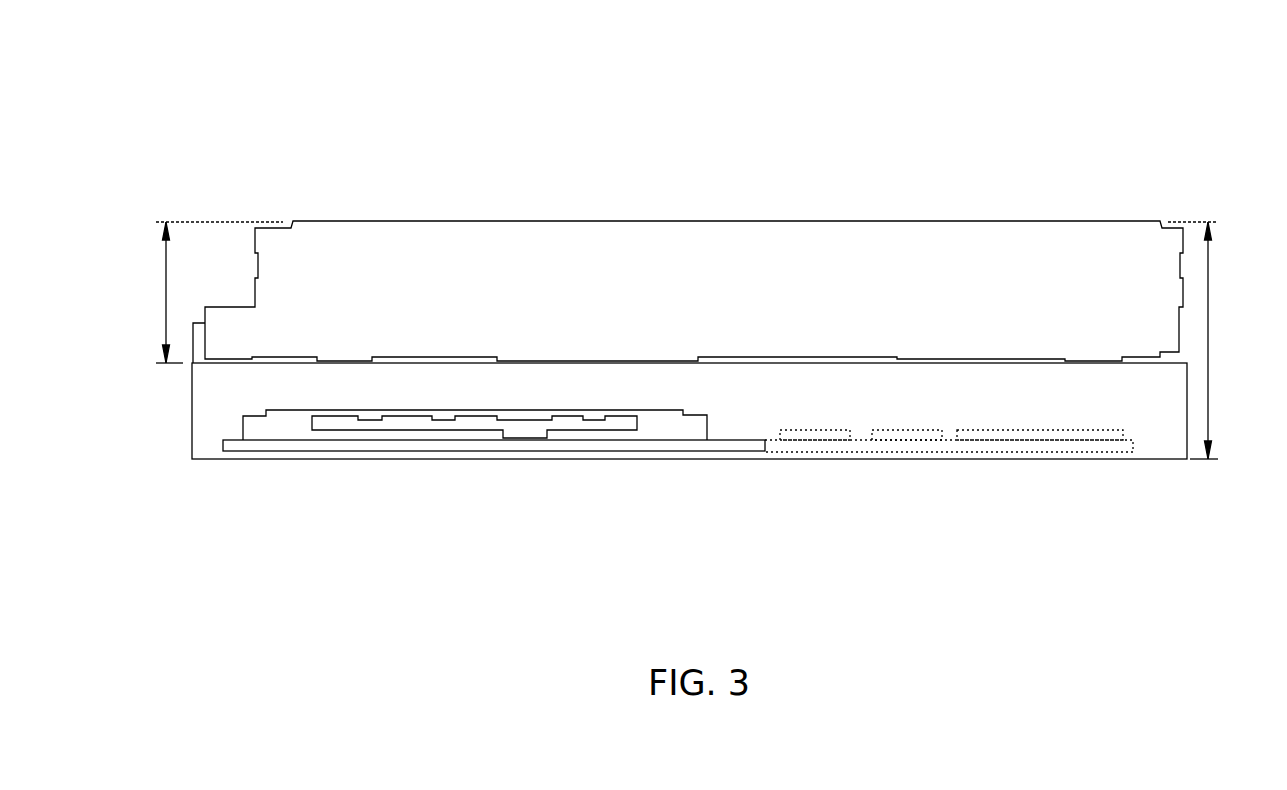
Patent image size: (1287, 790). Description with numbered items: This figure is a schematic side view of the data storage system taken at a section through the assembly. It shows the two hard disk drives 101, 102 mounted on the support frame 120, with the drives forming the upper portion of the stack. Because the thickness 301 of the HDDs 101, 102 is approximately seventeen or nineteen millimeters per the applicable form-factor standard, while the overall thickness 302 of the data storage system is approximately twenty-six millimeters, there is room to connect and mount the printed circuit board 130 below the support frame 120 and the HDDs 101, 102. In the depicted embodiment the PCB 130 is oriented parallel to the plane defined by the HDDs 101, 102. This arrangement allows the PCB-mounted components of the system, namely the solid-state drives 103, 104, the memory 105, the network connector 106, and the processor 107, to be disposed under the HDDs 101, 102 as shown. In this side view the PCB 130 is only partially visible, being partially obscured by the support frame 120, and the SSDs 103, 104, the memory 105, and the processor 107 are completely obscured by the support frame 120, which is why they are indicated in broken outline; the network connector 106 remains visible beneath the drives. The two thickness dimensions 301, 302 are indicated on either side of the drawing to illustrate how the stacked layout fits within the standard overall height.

The hard disk drive 101 is at (688, 292).
The hard disk drive 102 is at (740, 295).
The solid-state drive 103 is at (1044, 410).
The solid-state drive 104 is at (1000, 430).
The memory 105 is at (793, 430).
The network connector 106 is at (537, 410).
The processor 107 is at (897, 430).
The support frame 120 is at (205, 459).
The printed circuit board 130 is at (752, 438).
The thickness 301 is at (166, 290).
The thickness 302 is at (1208, 293).